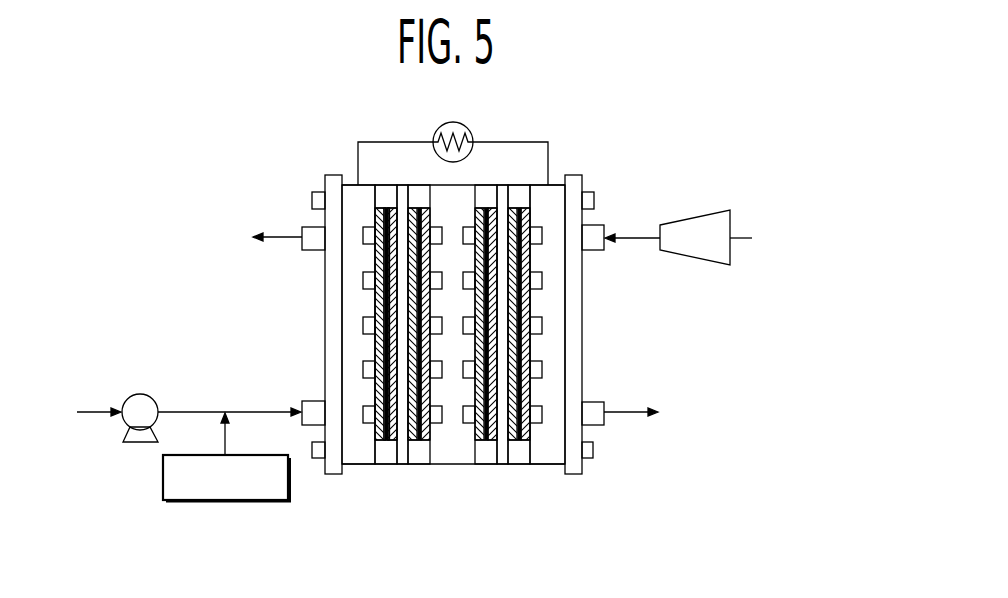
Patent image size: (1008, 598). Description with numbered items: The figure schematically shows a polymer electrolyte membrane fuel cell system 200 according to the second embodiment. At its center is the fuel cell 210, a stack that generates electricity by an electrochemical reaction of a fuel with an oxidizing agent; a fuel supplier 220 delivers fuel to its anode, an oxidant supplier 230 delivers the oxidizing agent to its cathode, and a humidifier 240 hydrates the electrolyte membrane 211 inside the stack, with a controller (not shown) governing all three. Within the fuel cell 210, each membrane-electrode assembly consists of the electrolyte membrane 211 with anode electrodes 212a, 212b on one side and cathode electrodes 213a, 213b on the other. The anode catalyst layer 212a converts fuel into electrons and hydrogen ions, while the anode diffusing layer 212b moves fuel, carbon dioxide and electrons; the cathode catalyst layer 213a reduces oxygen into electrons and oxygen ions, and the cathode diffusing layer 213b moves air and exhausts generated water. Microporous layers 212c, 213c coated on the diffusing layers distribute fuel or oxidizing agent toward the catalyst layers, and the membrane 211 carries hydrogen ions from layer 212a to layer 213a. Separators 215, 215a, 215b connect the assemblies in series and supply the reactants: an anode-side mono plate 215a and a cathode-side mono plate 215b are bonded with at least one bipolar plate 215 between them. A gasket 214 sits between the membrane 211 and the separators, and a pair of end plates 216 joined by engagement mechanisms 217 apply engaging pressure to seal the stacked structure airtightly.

The polymer electrolyte membrane fuel cell system 200 is at (220, 85).
The fuel cell 210 is at (320, 172).
The electrolyte membrane 211 is at (396, 440).
The catalyst layer 212a is at (386, 441).
The diffusing layer 212b is at (379, 445).
The microporous layer 212c is at (378, 307).
The catalyst layer 213a is at (410, 440).
The diffusing layer 213b is at (430, 440).
The microporous layer 213c is at (530, 308).
The gasket 214 is at (487, 457).
The bipolar plate 215 is at (457, 453).
The mono plate on the side of the anode 215a is at (355, 455).
The mono plate on the side of the cathode 215b is at (543, 452).
The end plates 216 is at (577, 465).
The engagement mechanisms 217 is at (594, 450).
The fuel supplier 220 is at (135, 445).
The oxidant supplier 230 is at (688, 215).
The humidifier 240 is at (223, 502).